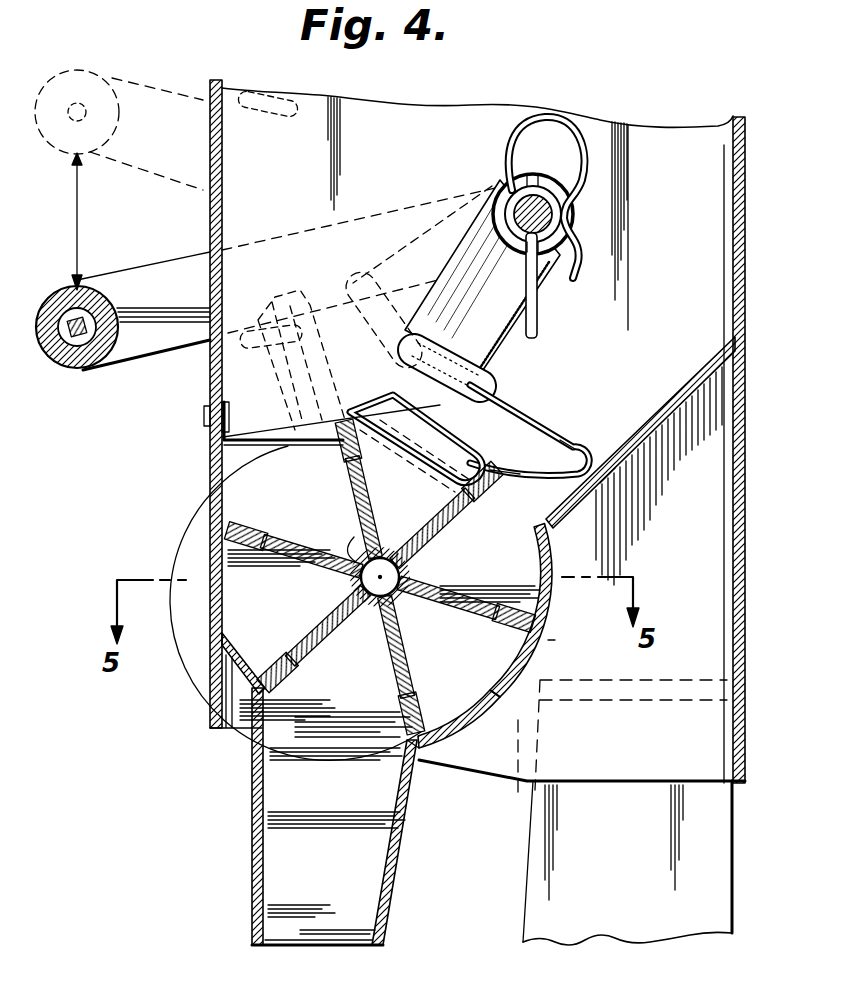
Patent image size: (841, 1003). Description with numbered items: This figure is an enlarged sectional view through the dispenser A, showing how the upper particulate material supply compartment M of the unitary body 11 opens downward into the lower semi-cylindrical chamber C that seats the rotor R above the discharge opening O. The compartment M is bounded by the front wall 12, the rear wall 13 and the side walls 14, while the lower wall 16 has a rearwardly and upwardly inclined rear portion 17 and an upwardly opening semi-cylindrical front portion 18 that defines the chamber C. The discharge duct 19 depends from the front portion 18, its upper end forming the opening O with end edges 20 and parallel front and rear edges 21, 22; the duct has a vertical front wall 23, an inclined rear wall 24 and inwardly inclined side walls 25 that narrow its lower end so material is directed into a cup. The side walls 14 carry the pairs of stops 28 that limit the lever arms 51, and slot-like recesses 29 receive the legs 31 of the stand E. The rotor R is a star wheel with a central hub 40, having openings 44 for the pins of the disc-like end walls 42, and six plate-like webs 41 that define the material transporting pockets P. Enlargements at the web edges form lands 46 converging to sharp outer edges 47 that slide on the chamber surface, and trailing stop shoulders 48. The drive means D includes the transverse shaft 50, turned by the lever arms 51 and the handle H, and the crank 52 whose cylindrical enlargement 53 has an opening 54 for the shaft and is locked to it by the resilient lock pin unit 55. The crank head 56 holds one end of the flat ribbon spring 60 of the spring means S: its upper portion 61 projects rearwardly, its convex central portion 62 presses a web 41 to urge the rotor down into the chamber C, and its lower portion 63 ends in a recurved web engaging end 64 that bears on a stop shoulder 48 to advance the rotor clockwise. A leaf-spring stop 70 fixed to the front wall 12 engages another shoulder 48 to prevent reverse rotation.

The unitary body 11 is at (672, 118).
The front wall 12 is at (210, 133).
The rear wall 13 is at (733, 122).
The side walls 14 is at (403, 110).
The lower wall 16 is at (705, 365).
The inclined rear portion 17 is at (618, 468).
The semi-cylindrical front portion 18 is at (560, 570).
The discharge duct 19 is at (250, 873).
The end edges 20 is at (324, 736).
The front edge 21 is at (270, 692).
The rear edge 22 is at (412, 745).
The front wall of duct 23 is at (252, 912).
The rear wall of duct 24 is at (390, 912).
The side walls of duct 25 is at (315, 935).
The stops 28 is at (268, 94).
The slot-like recesses 29 is at (618, 690).
The legs 31 is at (627, 863).
The hub 40 is at (412, 565).
The webs 41 is at (382, 577).
The end walls 42 is at (555, 548).
The openings 44 is at (350, 548).
The lands 46 is at (548, 610).
The outer edges 47 is at (555, 640).
The stop shoulders 48 is at (505, 612).
The shaft 50 is at (565, 215).
The lever arms 51 is at (163, 262).
The crank 52 is at (470, 255).
The cylindrical enlargement 53 is at (525, 200).
The opening 54 is at (548, 213).
The resilient lock pin unit 55 is at (535, 135).
The head 56 is at (435, 335).
The spring 60 is at (505, 398).
The upper portion 61 is at (555, 428).
The central portion 62 is at (515, 466).
The lower portion 63 is at (425, 465).
The web engaging end 64 is at (391, 556).
The leaf-spring stop 70 is at (298, 442).
The handle H is at (112, 288).
The drive means D is at (160, 355).
The dispenser A is at (208, 452).
The particulate material supply compartment M is at (457, 135).
The spring means S is at (540, 403).
The rotor R is at (215, 540).
The chamber C is at (245, 633).
The discharge opening O is at (270, 703).
The stand E is at (623, 945).
The material transporting pockets P is at (384, 607).